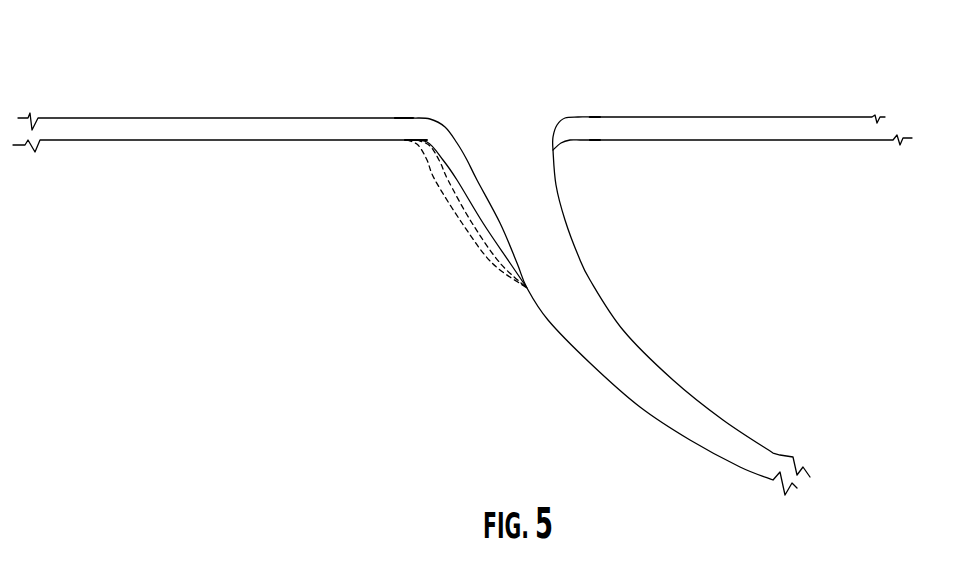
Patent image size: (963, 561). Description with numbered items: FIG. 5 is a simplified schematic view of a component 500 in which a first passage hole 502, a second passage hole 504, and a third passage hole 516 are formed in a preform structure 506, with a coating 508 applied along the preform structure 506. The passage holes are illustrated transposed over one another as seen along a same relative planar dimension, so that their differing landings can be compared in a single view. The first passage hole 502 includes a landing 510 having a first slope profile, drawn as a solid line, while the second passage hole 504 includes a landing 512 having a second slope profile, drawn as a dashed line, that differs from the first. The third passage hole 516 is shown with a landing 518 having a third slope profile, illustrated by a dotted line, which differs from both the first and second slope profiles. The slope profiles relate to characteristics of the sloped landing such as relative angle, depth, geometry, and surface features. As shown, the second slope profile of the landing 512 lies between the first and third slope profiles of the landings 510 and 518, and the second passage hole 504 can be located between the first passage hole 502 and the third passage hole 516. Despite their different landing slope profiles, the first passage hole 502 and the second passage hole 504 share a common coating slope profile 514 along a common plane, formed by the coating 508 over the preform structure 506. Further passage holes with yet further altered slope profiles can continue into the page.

The component 500 is at (287, 82).
The first passage hole 502 is at (515, 96).
The second passage hole 504 is at (497, 128).
The third passage hole 516 is at (497, 128).
The preform structure 506 is at (887, 138).
The coating 508 is at (800, 117).
The landing 510 is at (468, 195).
The landing 512 is at (468, 222).
The common coating slope profile 514 is at (468, 163).
The landing 518 is at (485, 260).